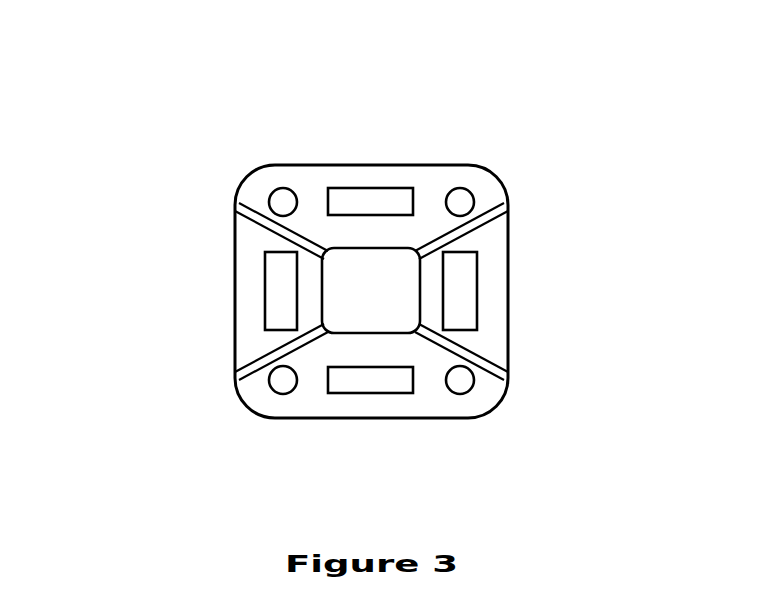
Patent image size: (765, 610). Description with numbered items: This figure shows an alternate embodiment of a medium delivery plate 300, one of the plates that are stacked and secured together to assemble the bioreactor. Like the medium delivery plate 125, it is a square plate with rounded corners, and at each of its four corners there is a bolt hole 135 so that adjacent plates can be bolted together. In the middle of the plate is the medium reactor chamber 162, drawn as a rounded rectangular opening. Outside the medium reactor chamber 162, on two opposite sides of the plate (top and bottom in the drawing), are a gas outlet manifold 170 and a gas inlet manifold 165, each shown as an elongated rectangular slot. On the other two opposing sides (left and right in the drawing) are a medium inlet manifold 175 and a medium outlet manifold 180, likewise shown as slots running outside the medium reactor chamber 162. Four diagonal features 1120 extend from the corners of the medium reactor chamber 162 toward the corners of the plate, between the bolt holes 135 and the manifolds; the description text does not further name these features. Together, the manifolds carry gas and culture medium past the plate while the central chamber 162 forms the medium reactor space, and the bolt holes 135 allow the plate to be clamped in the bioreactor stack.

The medium delivery plate 300 is at (170, 111).
The medium delivery plate 125 is at (440, 178).
The bolt holes 135 is at (308, 165).
The medium reactor chamber 162 is at (396, 304).
The gas inlet manifold 165 is at (373, 385).
The gas outlet manifold 170 is at (366, 200).
The medium inlet manifold 175 is at (268, 298).
The medium outlet manifold 180 is at (476, 305).
The diagonal ribs 1120 is at (240, 210).